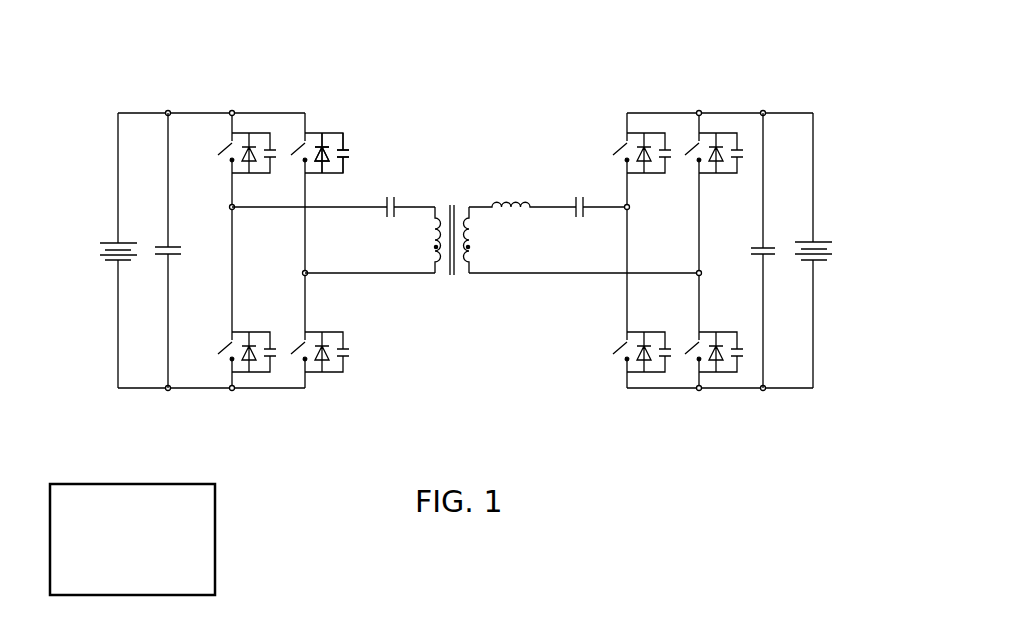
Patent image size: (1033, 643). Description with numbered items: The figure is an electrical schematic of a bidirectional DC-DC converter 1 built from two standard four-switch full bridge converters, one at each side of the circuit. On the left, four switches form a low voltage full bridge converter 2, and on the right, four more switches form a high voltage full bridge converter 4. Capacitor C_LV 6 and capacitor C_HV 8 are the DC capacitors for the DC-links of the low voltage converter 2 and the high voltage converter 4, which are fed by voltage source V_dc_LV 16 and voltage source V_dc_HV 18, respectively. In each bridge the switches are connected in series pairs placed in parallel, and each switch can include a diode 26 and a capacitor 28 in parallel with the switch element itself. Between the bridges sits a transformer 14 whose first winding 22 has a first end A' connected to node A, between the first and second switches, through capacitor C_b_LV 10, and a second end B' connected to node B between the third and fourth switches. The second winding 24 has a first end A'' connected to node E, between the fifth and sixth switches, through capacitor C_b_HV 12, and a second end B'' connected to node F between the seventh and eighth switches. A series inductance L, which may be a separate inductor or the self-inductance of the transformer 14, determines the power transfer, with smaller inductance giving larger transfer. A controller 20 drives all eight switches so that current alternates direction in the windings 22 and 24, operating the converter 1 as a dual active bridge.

The bidirectional DC-DC converter 1 is at (534, 57).
The low voltage full bridge converter 2 is at (182, 67).
The high voltage full bridge converter 4 is at (752, 64).
The capacitor C_LV 6 is at (172, 261).
The capacitor C_HV 8 is at (768, 261).
The capacitor C_b_LV 10 is at (385, 199).
The capacitor C_b_HV 12 is at (586, 195).
The transformer 14 is at (458, 311).
The voltage source V_dc_LV 16 is at (108, 263).
The voltage source V_dc_HV 18 is at (819, 239).
The controller 20 is at (215, 550).
The first winding 22 is at (435, 247).
The second winding 24 is at (468, 247).
The diode 26 is at (322, 146).
The capacitor 28 is at (348, 151).